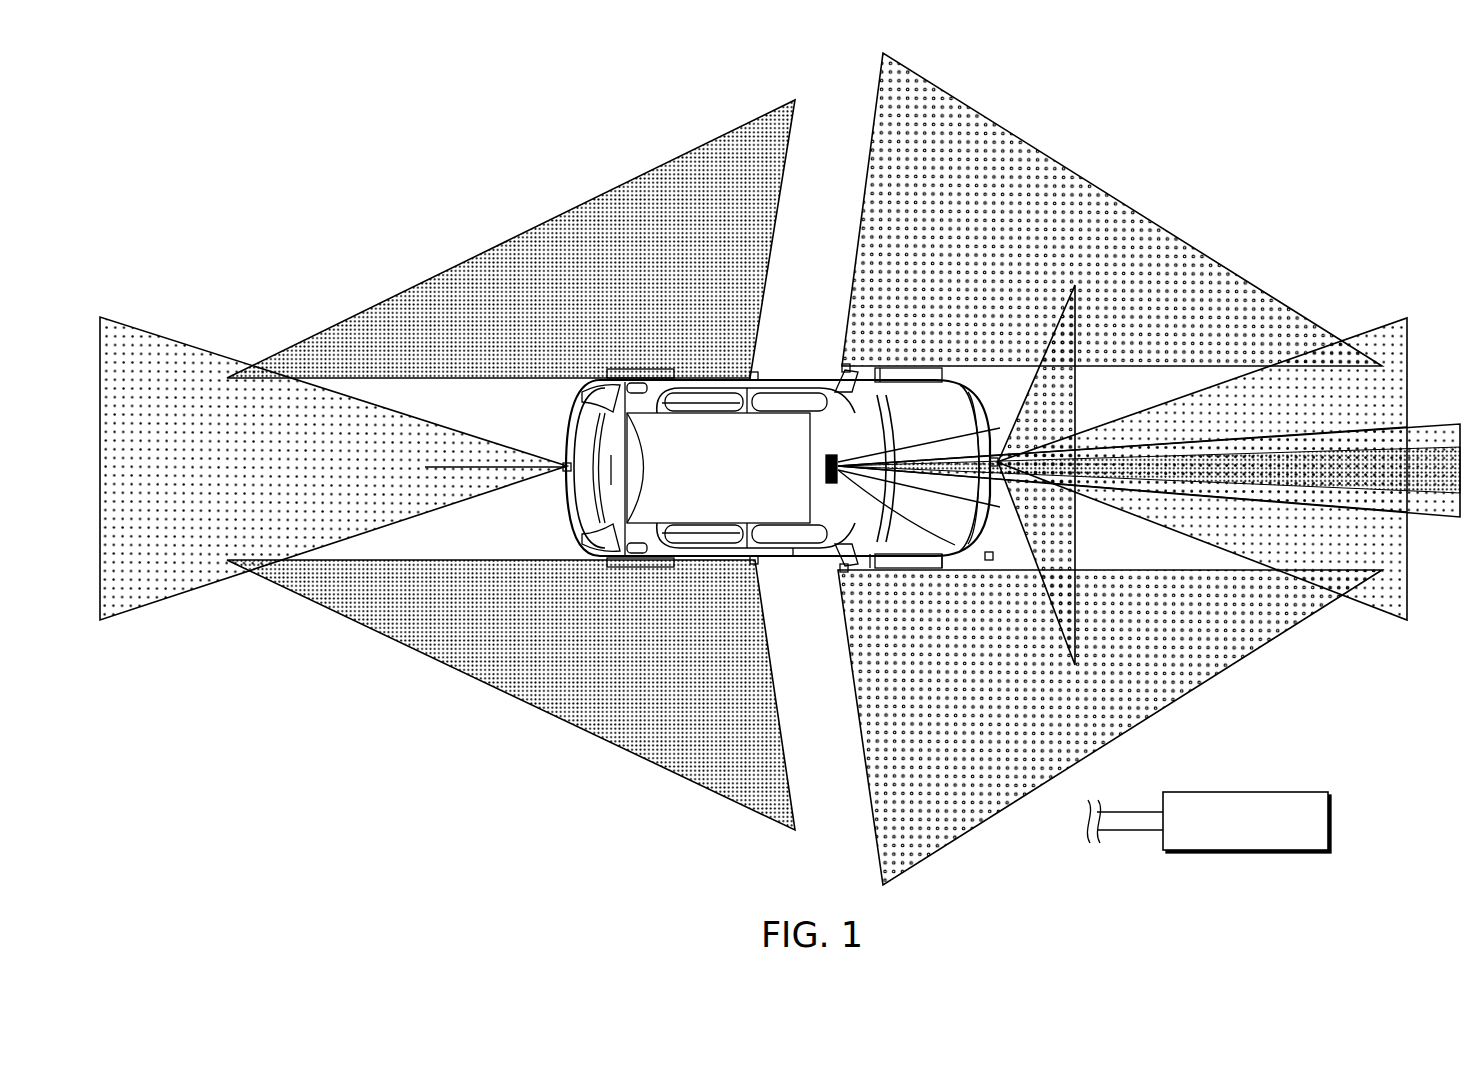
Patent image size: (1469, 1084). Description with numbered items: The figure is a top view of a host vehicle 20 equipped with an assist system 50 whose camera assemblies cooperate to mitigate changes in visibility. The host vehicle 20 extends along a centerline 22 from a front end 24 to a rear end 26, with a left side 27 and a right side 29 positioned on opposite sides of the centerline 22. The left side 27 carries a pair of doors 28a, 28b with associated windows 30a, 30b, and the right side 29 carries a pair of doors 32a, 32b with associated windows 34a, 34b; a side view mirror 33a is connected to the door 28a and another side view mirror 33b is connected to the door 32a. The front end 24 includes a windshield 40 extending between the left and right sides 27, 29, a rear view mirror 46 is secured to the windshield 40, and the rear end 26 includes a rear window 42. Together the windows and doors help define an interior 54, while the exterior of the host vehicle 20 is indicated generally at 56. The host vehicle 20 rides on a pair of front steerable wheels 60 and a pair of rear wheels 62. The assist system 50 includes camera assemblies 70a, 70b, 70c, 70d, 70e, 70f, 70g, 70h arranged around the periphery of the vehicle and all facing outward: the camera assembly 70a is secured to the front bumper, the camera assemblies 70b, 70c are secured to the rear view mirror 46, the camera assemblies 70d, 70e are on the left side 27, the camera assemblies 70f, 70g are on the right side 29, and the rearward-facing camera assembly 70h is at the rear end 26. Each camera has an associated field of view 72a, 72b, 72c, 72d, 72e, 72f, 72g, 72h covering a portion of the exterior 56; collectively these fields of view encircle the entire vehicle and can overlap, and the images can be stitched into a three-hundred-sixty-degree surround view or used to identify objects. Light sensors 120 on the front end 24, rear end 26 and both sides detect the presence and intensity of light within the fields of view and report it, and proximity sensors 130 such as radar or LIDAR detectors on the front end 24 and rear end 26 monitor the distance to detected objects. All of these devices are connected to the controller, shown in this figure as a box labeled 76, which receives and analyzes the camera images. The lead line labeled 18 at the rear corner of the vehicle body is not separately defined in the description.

The vehicle 18 is at (578, 387).
The host vehicle 20 is at (590, 428).
The centerline 22 is at (1088, 484).
The front end 24 is at (952, 574).
The rear end 26 is at (581, 553).
The left side 27 is at (786, 372).
The door 28a is at (846, 371).
The door 28b is at (690, 392).
The right side 29 is at (793, 562).
The window 30a is at (770, 398).
The window 30b is at (692, 398).
The door 32a is at (823, 557).
The door 32b is at (700, 527).
The side view mirror 33a is at (880, 368).
The side view mirror 33b is at (868, 583).
The window 34a is at (779, 530).
The window 34b is at (718, 530).
The windshield 40 is at (831, 490).
The rear window 42 is at (637, 479).
The rear view mirror 46 is at (830, 455).
The assist system 50 is at (1191, 182).
The interior 54 is at (788, 398).
The exterior 56 is at (1271, 726).
The front steerable wheels 60 is at (922, 368).
The rear wheels 62 is at (640, 369).
The camera assembly 70a is at (1000, 470).
The camera assembly 70b is at (992, 562).
The camera assembly 70c is at (1024, 620).
The camera assembly 70d is at (846, 364).
The camera assembly 70e is at (752, 372).
The camera assembly 70f is at (846, 574).
The camera assembly 70g is at (755, 565).
The camera assembly 70h is at (563, 462).
The field of view 72a is at (1071, 397).
The field of view 72b is at (1357, 553).
The field of view 72c is at (1455, 481).
The field of view 72d is at (1011, 223).
The field of view 72e is at (592, 278).
The field of view 72f is at (1009, 723).
The field of view 72g is at (634, 695).
The field of view 72h is at (303, 481).
The controller 76 is at (1333, 822).
The light sensor 120 is at (775, 258).
The proximity sensor 130 is at (477, 399).